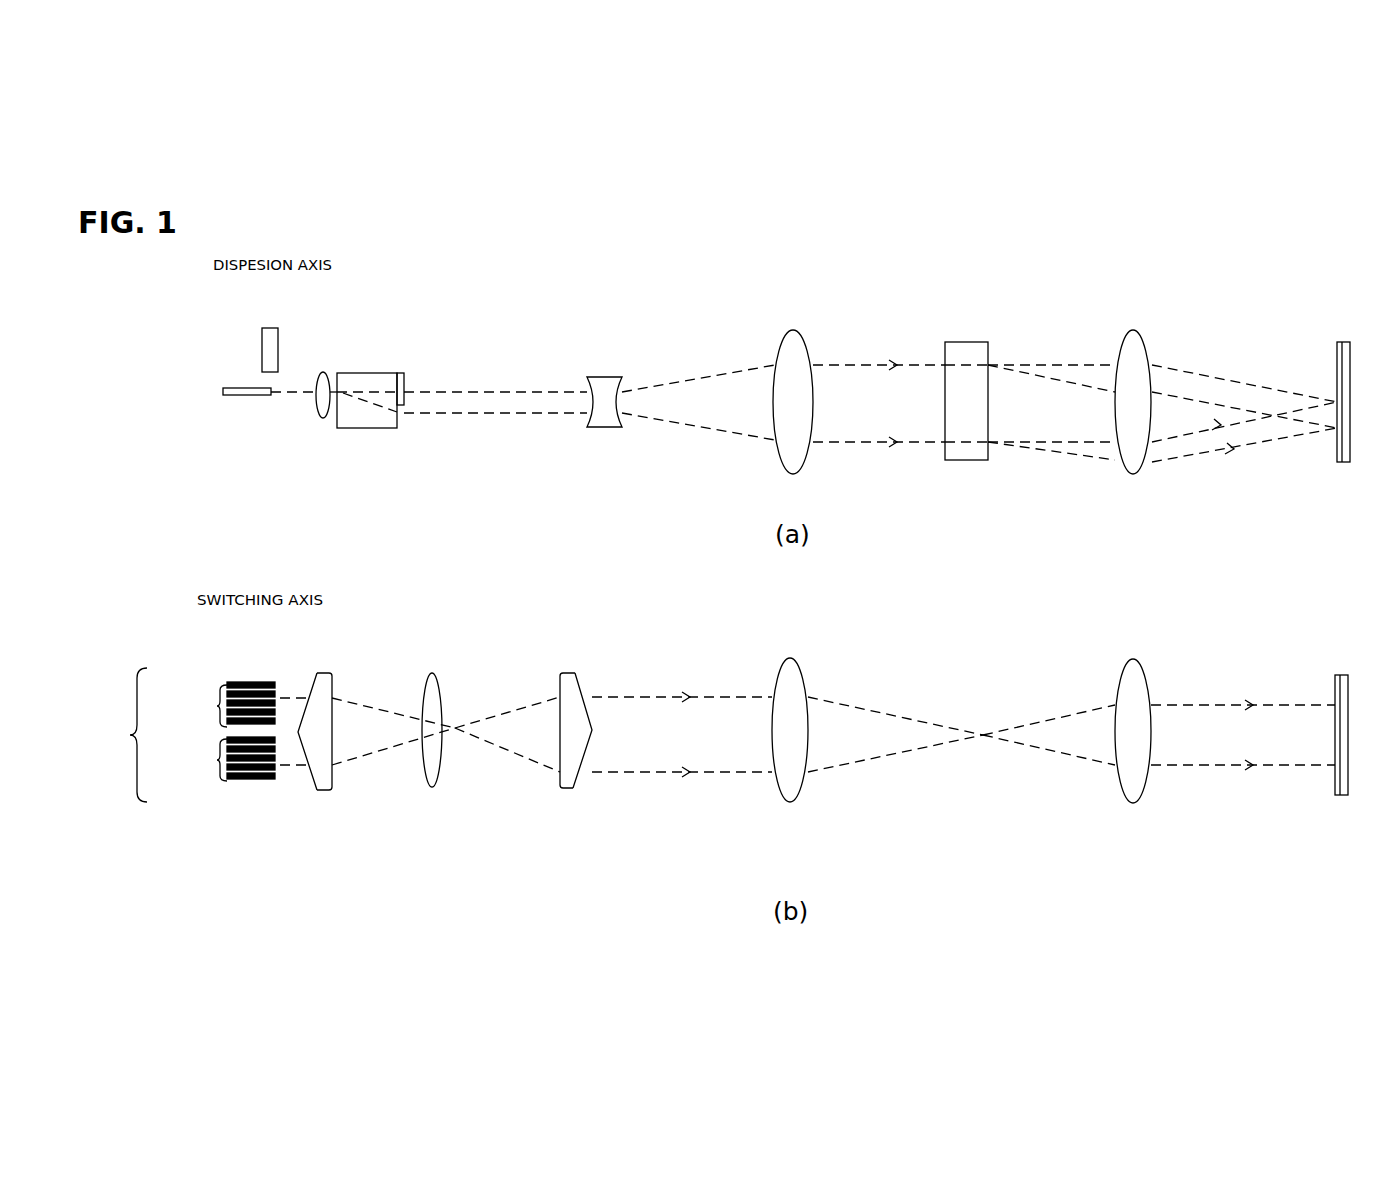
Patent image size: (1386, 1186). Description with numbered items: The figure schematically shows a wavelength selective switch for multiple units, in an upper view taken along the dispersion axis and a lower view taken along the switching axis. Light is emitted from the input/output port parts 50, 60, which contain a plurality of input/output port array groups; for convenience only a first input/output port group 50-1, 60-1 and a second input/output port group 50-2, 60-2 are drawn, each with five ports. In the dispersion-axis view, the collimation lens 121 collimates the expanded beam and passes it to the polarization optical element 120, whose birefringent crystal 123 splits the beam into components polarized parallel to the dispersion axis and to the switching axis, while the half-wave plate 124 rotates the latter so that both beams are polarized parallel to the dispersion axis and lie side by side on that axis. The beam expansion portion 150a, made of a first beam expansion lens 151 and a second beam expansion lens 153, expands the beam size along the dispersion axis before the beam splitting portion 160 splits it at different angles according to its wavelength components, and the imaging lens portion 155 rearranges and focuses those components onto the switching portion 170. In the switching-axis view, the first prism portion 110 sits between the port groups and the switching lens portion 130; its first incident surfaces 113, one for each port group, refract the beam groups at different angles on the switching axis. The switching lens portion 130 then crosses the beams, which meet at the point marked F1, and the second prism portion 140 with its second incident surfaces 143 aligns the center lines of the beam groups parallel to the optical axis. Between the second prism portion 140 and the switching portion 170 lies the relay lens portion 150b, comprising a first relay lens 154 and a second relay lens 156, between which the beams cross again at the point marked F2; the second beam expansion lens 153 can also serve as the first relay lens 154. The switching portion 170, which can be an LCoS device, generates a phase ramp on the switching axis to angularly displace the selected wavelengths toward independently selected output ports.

The input/output port part 50 is at (176, 595).
The input/output port part 60 is at (202, 595).
The first input/output port array group 50-1 is at (210, 699).
The second input/output port array group 50-2 is at (210, 770).
The first input/output port array group 60-1 is at (210, 699).
The second input/output port array group 60-2 is at (210, 770).
The first prism portion 110 is at (298, 766).
The first incident surface 113 is at (307, 762).
The polarization optical element 120 is at (405, 346).
The collimation lens 121 is at (323, 372).
The birefringent crystal 123 is at (367, 382).
The half-wave plate 124 is at (400, 385).
The switching lens portion 130 is at (438, 787).
The second prism portion 140 is at (613, 768).
The second incident surface 143 is at (583, 760).
The beam expansion portion 150a is at (700, 366).
The relay lens portion 150b is at (961, 780).
The first beam expansion lens 151 is at (613, 377).
The second beam expansion lens 153 is at (782, 345).
The first relay lens 154 is at (795, 787).
The imaging lens portion 155 is at (1135, 348).
The second relay lens 156 is at (1127, 785).
The beam splitting portion 160 is at (973, 353).
The switching portion 170 is at (1343, 463).
The first focal point F1 is at (455, 728).
The second focal point F2 is at (983, 735).